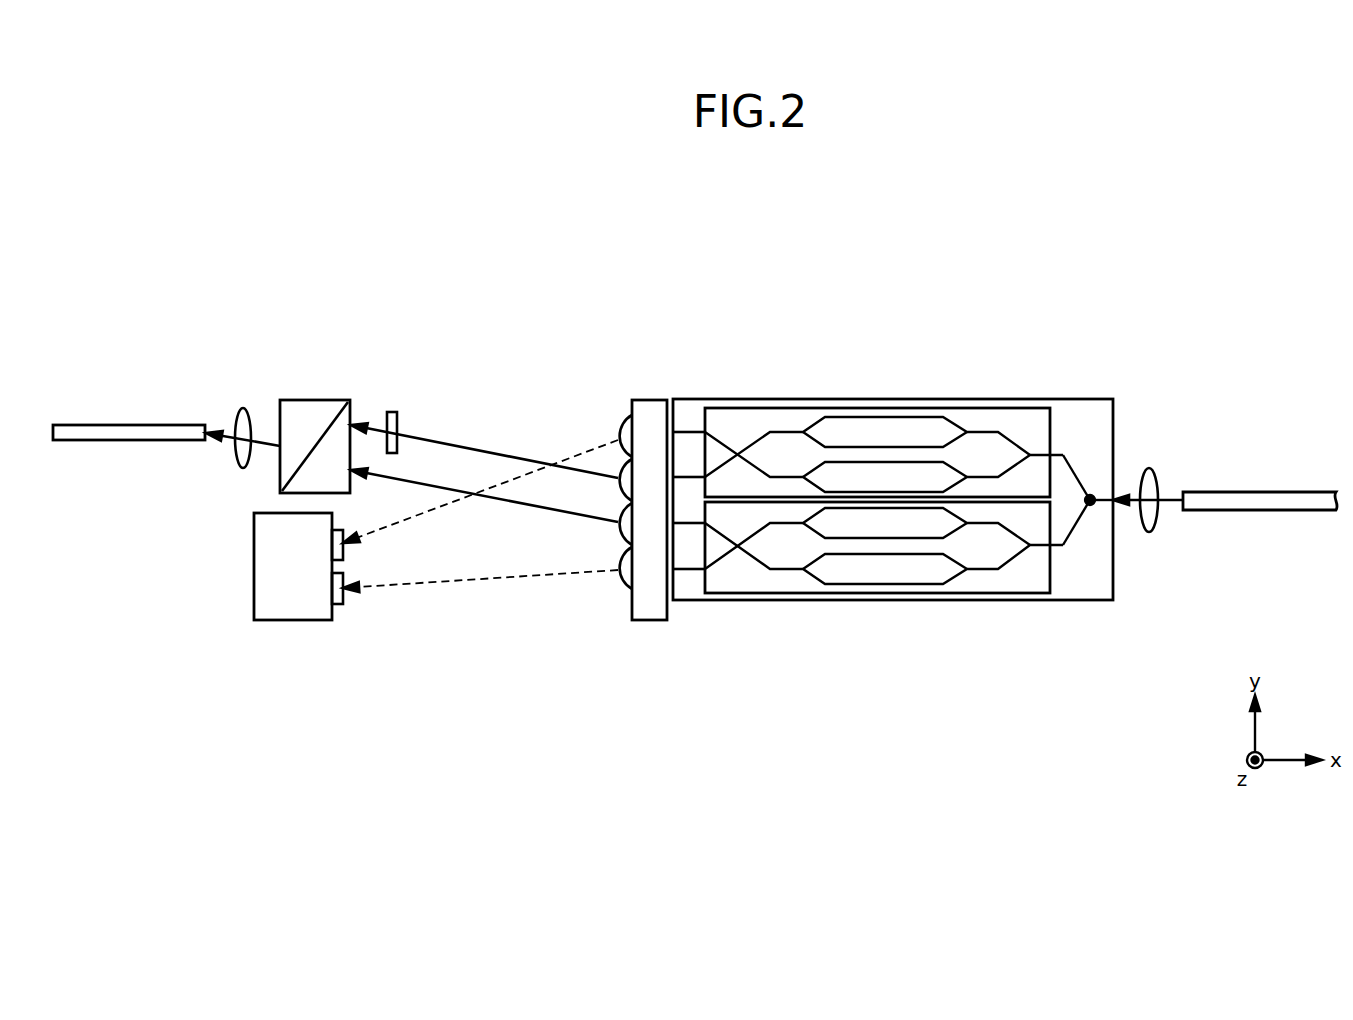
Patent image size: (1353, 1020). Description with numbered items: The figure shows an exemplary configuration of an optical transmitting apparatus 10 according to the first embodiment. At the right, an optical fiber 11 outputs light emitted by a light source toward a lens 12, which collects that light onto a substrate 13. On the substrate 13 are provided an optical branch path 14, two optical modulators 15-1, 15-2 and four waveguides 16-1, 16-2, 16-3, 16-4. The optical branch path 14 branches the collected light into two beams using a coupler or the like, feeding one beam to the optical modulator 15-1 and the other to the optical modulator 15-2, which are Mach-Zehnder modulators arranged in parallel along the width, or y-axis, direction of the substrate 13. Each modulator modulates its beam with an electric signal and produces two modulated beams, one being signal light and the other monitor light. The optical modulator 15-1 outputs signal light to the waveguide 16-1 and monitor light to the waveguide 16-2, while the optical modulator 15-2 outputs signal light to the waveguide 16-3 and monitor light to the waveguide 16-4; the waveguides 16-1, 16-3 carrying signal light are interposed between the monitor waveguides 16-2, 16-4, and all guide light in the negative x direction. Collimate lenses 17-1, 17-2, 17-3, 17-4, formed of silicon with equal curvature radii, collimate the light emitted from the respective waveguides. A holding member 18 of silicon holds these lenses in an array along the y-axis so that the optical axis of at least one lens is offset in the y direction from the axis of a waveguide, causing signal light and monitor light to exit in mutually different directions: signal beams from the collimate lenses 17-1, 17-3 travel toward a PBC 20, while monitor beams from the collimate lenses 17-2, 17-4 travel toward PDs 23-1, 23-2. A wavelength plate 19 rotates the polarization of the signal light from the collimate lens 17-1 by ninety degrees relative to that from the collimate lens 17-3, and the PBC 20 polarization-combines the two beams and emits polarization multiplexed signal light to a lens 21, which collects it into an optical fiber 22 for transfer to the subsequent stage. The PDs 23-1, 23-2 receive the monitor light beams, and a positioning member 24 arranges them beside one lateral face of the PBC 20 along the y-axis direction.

The optical transmitting apparatus 10 is at (1092, 253).
The optical fiber 11 is at (1273, 490).
The lens 12 is at (1148, 467).
The substrate 13 is at (1086, 398).
The optical branch path 14 is at (1090, 507).
The optical modulator 15-1 is at (1052, 430).
The optical modulator 15-2 is at (1052, 570).
The waveguide 16-1 is at (703, 437).
The waveguide 16-2 is at (688, 475).
The waveguide 16-3 is at (703, 530).
The waveguide 16-4 is at (688, 573).
The collimate lens 17-1 is at (622, 462).
The collimate lens 17-2 is at (620, 418).
The collimate lens 17-3 is at (622, 546).
The collimate lens 17-4 is at (620, 590).
The holding member 18 is at (651, 398).
The wavelength plate 19 is at (392, 410).
The PBC 20 is at (313, 398).
The lens 21 is at (243, 408).
The optical fiber 22 is at (96, 422).
The PD 23-1 is at (345, 556).
The PD 23-2 is at (345, 598).
The positioning member 24 is at (254, 563).